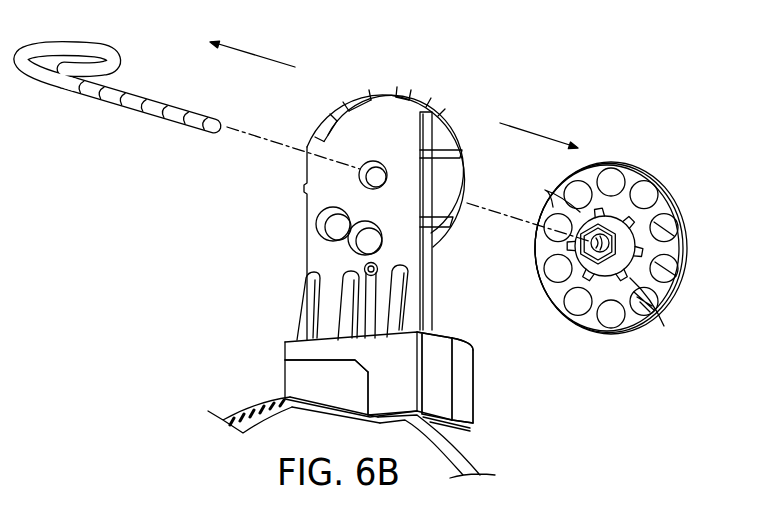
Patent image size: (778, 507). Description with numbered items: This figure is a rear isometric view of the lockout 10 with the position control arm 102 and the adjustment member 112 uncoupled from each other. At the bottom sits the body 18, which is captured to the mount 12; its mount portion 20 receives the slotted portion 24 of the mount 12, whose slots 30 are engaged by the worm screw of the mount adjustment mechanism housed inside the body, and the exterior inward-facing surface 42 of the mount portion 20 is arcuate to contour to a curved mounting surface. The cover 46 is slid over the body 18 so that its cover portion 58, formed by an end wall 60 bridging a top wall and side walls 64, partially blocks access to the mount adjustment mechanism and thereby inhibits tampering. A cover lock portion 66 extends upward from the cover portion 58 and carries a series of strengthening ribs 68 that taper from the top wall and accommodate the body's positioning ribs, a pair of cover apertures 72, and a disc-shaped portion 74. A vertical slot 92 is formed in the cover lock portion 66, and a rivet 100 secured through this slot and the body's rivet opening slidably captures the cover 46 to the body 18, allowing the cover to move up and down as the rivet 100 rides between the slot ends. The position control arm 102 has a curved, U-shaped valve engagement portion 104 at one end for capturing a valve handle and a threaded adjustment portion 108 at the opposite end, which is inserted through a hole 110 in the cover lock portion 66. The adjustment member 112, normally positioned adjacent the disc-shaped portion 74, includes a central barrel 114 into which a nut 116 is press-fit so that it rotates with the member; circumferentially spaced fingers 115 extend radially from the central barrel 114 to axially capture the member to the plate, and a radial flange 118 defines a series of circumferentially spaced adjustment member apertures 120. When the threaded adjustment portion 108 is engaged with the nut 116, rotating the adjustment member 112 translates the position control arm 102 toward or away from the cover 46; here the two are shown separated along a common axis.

The lockout 10 is at (628, 107).
The mount 12 is at (482, 457).
The body 18 is at (287, 380).
The mount portion 20 is at (322, 392).
The slotted portion 24 is at (228, 403).
The slots 30 is at (270, 418).
The inward-facing surface 42 is at (313, 414).
The cover 46 is at (462, 333).
The cover portion 58 is at (477, 393).
The end wall 60 is at (427, 383).
The side walls 64 is at (385, 380).
The cover lock portion 66 is at (300, 194).
The strengthening ribs 68 is at (342, 274).
The cover apertures 72 is at (366, 221).
The disc-shaped portion 74 is at (437, 98).
The vertical slot 92 is at (376, 293).
The rivet 100 is at (375, 263).
The position control arm 102 is at (120, 120).
The valve engagement portion 104 is at (64, 48).
The adjustment portion 108 is at (153, 97).
The hole 110 is at (380, 162).
The adjustment member 112 is at (653, 167).
The central barrel 114 is at (673, 293).
The fingers 115 is at (666, 190).
The nut 116 is at (609, 213).
The radial flange 118 is at (693, 240).
The adjustment member apertures 120 is at (545, 190).